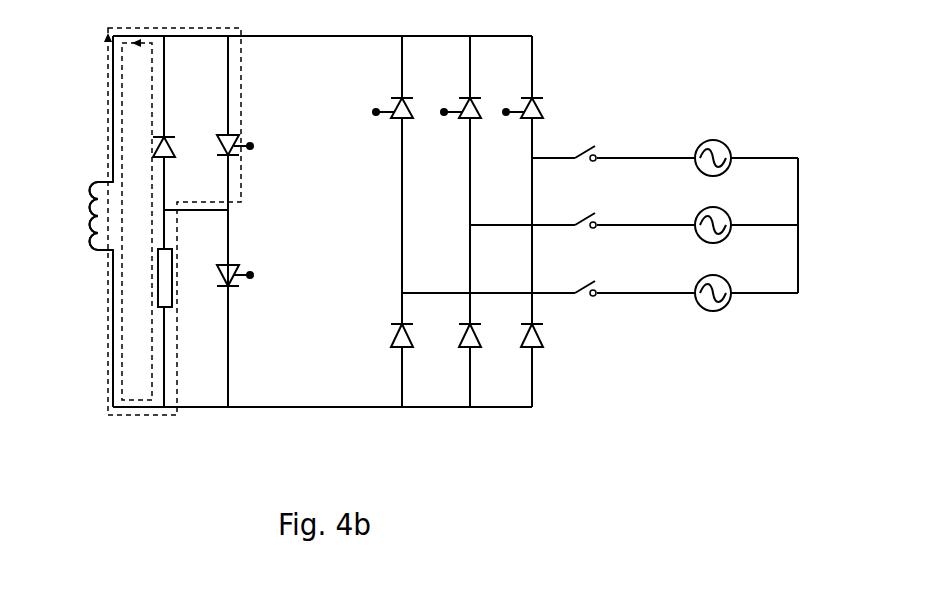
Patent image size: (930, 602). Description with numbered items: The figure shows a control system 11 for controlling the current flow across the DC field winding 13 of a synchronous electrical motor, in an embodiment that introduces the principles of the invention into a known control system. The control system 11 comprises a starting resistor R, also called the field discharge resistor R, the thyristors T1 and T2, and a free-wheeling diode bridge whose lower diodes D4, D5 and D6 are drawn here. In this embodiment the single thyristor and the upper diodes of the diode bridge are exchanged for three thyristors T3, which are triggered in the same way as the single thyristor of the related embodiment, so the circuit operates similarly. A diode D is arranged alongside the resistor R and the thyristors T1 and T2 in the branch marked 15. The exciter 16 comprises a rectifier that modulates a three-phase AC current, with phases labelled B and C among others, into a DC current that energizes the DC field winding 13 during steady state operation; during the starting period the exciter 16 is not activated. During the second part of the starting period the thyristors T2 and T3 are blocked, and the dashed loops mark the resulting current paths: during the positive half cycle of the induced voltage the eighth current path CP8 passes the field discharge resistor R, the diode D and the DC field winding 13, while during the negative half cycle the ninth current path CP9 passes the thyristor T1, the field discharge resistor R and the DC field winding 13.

The ninth current path CP9 is at (110, 84).
The eighth current path CP8 is at (198, 88).
The diode D is at (154, 149).
The thyristor T1 is at (245, 156).
The thyristor T2 is at (243, 286).
The starting resistor R is at (177, 263).
The switching branch 15 is at (228, 231).
The DC field winding 13 is at (93, 256).
The thyristors T3 is at (450, 100).
The free-wheeling diode D4 is at (385, 340).
The free-wheeling diode D5 is at (451, 340).
The free-wheeling diode D6 is at (514, 340).
The exciter 16 is at (742, 158).
The phase B source B is at (713, 212).
The phase C source C is at (713, 279).
The control system 11 is at (496, 438).